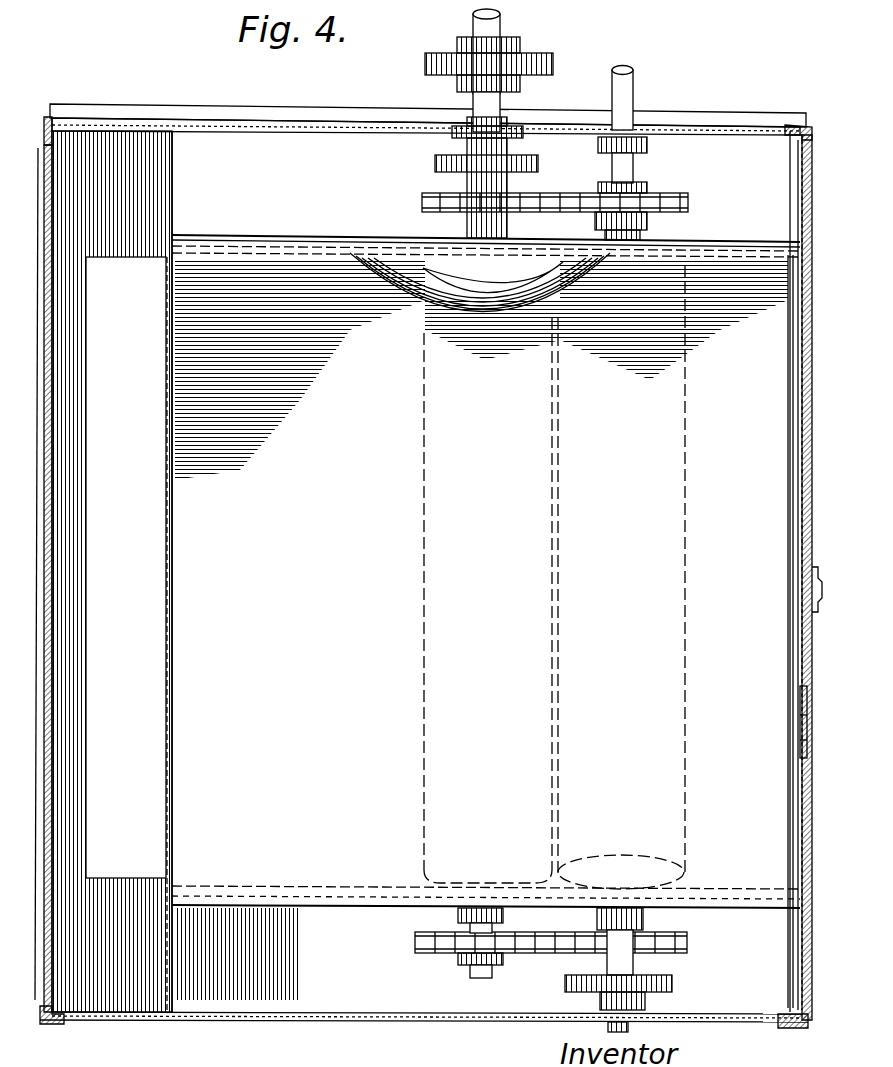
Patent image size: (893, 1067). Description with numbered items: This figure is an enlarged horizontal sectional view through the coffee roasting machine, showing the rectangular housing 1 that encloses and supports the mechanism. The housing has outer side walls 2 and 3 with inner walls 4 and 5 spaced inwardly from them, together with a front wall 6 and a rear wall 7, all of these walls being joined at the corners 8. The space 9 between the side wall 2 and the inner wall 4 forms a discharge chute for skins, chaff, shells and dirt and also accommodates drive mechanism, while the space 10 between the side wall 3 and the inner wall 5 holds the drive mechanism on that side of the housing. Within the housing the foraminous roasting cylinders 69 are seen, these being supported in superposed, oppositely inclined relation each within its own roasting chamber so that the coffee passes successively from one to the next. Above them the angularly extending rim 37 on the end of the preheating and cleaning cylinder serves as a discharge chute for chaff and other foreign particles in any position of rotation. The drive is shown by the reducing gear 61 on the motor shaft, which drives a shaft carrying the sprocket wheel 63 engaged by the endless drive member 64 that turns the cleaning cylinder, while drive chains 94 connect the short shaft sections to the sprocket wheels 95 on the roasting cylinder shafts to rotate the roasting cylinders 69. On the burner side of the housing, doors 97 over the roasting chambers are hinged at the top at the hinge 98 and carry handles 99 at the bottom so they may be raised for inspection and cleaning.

The housing 1 is at (706, 110).
The side wall 2 is at (300, 128).
The side wall 3 is at (282, 1012).
The inner wall 4 is at (258, 246).
The inner wall 5 is at (342, 890).
The front wall 6 is at (802, 192).
The rear wall 7 is at (50, 200).
The corner 8 is at (44, 1024).
The space 9 is at (480, 185).
The space 10 is at (480, 960).
The rim 37 is at (490, 312).
The reducing gear 61 is at (428, 62).
The sprocket wheel 63 is at (436, 162).
The endless drive member 64 is at (440, 170).
The roasting cylinder 69 is at (424, 586).
The drive chain 94 is at (688, 203).
The sprocket wheel 95 is at (672, 984).
The door 97 is at (800, 650).
The hinge 98 is at (798, 708).
The handle 99 is at (816, 589).